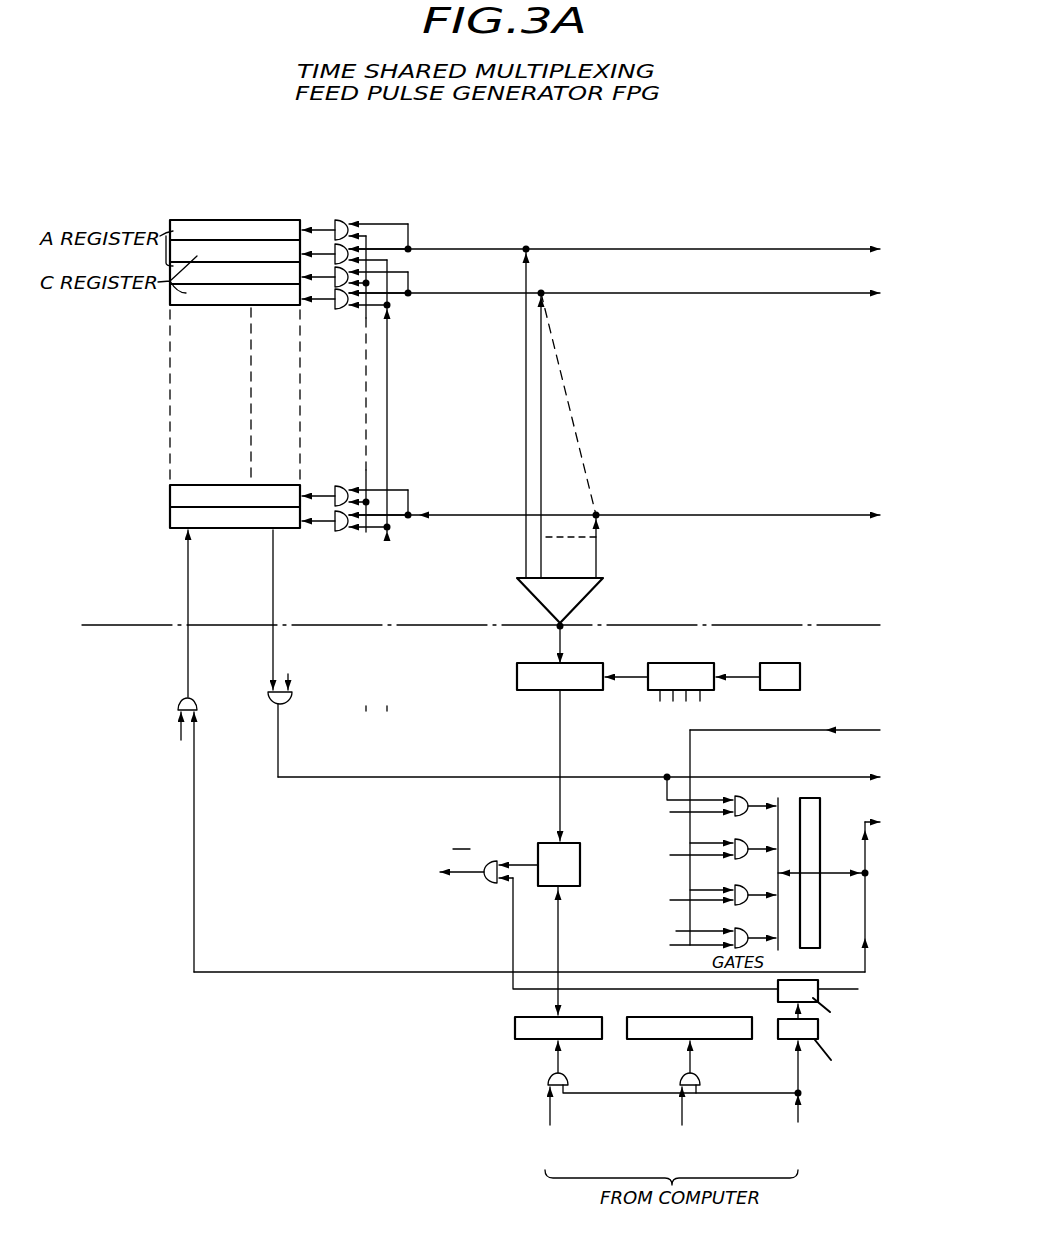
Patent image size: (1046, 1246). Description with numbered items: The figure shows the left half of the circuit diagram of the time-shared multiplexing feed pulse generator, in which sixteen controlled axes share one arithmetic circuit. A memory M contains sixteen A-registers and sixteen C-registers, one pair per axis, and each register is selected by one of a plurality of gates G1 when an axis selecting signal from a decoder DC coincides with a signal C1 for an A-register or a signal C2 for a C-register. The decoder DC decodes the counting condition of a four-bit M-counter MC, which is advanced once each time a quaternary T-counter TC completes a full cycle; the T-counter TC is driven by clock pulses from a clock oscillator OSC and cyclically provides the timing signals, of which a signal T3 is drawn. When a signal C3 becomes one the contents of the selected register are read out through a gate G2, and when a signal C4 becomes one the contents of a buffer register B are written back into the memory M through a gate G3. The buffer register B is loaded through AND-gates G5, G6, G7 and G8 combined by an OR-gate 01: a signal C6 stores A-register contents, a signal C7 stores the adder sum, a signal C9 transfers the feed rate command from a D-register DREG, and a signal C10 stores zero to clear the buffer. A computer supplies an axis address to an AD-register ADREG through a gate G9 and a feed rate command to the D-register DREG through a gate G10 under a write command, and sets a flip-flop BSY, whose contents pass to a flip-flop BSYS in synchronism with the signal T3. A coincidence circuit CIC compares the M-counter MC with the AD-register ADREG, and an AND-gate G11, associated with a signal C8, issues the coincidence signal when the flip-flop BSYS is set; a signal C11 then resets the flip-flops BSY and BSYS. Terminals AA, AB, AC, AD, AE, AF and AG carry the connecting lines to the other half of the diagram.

The memory M is at (284, 197).
The gates G1 is at (366, 351).
The signal C1 is at (357, 491).
The signal C2 is at (380, 503).
The signal C3 is at (288, 655).
The signal C4 is at (181, 758).
The signal C6 is at (684, 812).
The signal C7 is at (684, 855).
The signal C8 is at (420, 871).
The signal C9 is at (684, 900).
The signal C10 is at (684, 945).
The signal C11 is at (839, 1037).
The terminal AA is at (637, 250).
The terminal AB is at (637, 294).
The terminal AC is at (636, 516).
The terminal AD is at (504, 626).
The terminal AE is at (806, 731).
The terminal AF is at (600, 778).
The terminal AG is at (894, 893).
The decoder DC is at (578, 602).
The M-counter MC is at (549, 703).
The T-counter TC is at (694, 662).
The clock oscillator OSC is at (762, 688).
The buffer register B is at (852, 779).
The OR-gate 01 is at (782, 918).
The AND-gate G5 is at (736, 803).
The AND-gate G6 is at (736, 845).
The AND-gate G7 is at (736, 888).
The AND-gate G8 is at (736, 931).
The coincidence circuit CIC is at (575, 875).
The AND-gate G11 is at (513, 845).
The gate G3 is at (178, 705).
The gate G2 is at (293, 712).
The flip-flop BSYS is at (819, 1003).
The flip-flop BSY is at (818, 1038).
The signal T3 is at (850, 990).
The AD-register ADREG is at (515, 1027).
The D-register DREG is at (680, 1018).
The gate G9 is at (548, 1080).
The gate G10 is at (702, 1080).